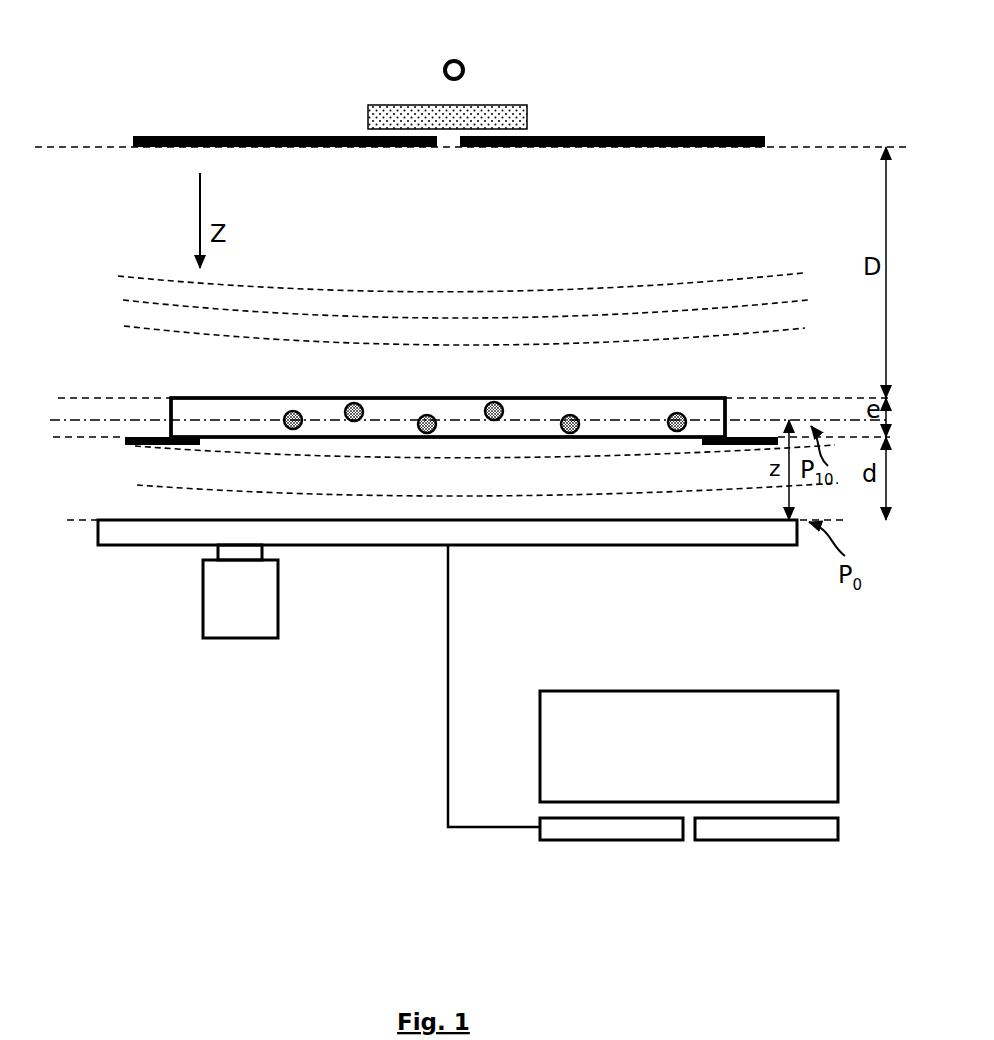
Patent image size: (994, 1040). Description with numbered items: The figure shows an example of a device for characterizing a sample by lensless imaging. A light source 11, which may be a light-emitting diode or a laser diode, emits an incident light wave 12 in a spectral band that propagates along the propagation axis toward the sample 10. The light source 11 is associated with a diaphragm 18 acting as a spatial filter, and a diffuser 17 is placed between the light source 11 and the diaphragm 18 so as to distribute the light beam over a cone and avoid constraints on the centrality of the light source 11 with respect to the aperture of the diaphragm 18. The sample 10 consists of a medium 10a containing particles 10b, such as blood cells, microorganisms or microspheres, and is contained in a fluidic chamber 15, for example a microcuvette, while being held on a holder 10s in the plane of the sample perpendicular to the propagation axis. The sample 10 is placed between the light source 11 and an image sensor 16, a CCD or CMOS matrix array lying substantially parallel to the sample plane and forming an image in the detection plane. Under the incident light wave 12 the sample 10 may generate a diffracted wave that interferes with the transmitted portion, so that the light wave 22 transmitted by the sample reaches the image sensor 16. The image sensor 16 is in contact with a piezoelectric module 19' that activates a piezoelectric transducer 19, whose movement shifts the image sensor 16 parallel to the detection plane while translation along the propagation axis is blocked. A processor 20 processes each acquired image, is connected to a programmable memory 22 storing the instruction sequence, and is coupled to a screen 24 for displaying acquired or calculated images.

The sample 10 is at (170, 411).
The medium 10a is at (638, 412).
The particles 10b is at (341, 409).
The holder 10s is at (160, 448).
The light source 11 is at (444, 70).
The incident light wave 12 is at (115, 261).
The fluidic chamber 15 is at (728, 410).
The image sensor 16 is at (764, 544).
The diffuser 17 is at (506, 122).
The diaphragm 18 is at (768, 146).
The piezoelectric transducer 19 is at (292, 575).
The piezoelectric module 19' is at (275, 623).
The processor 20 is at (604, 833).
The light wave transmitted by the sample 22 is at (108, 437).
The screen 24 is at (813, 729).